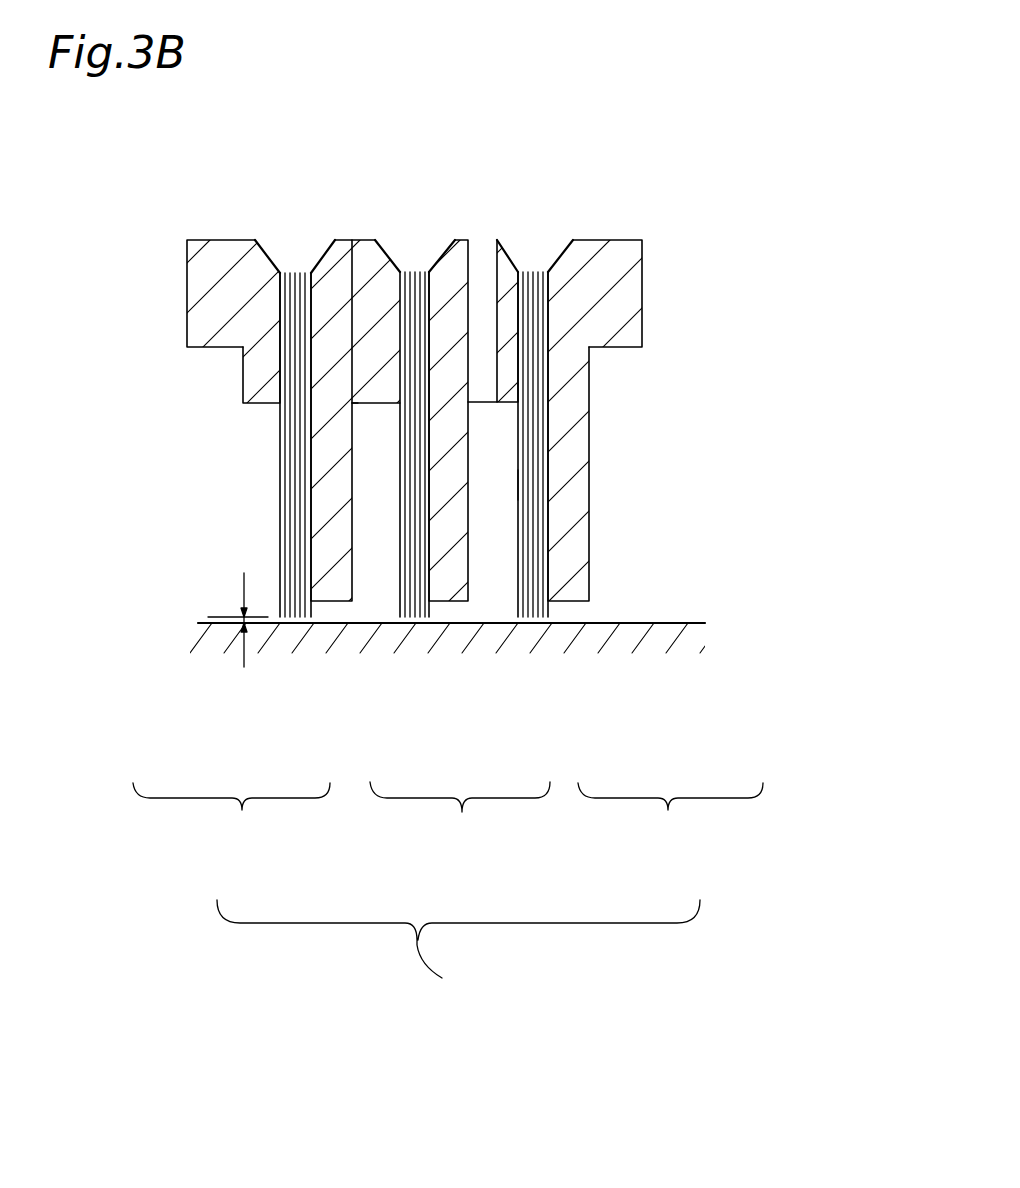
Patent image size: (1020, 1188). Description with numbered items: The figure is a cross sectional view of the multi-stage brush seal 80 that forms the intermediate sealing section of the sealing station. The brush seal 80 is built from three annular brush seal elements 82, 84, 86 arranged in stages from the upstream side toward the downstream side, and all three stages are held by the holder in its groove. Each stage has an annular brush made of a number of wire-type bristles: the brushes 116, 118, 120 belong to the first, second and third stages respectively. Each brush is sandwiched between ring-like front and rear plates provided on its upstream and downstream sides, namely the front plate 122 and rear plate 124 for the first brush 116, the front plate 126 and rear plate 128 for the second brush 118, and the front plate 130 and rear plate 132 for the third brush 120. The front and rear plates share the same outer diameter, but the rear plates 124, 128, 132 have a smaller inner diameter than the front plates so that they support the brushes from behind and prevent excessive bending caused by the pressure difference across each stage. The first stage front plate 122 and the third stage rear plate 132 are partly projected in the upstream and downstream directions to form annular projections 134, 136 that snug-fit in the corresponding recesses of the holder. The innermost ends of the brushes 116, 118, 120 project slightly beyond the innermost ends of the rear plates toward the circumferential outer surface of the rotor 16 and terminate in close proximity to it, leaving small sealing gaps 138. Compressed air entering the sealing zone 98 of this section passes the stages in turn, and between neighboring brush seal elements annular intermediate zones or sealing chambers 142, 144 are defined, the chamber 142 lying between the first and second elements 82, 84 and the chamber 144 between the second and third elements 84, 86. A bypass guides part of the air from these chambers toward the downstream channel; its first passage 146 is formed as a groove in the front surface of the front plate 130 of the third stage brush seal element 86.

The rotor 16 is at (695, 623).
The multi-stage brush seal 80 is at (458, 956).
The first stage brush seal element 82 is at (231, 818).
The second stage brush seal element 84 is at (460, 818).
The third stage brush seal element 86 is at (670, 818).
The sealing zone 98 is at (375, 405).
The first brush 116 is at (291, 620).
The second brush 118 is at (420, 623).
The third brush 120 is at (541, 623).
The first stage front plate 122 is at (250, 404).
The first stage rear plate 124 is at (332, 620).
The second stage front plate 126 is at (343, 614).
The second stage rear plate 128 is at (460, 602).
The third stage front plate 130 is at (505, 403).
The third stage rear plate 132 is at (590, 590).
The upstream annular projection 134 is at (203, 312).
The downstream annular projection 136 is at (632, 308).
The sealing gap 138 is at (238, 617).
The intermediate zone or sealing chamber 142 is at (362, 456).
The intermediate zone or sealing chamber 144 is at (510, 483).
The first passage 146 is at (482, 257).